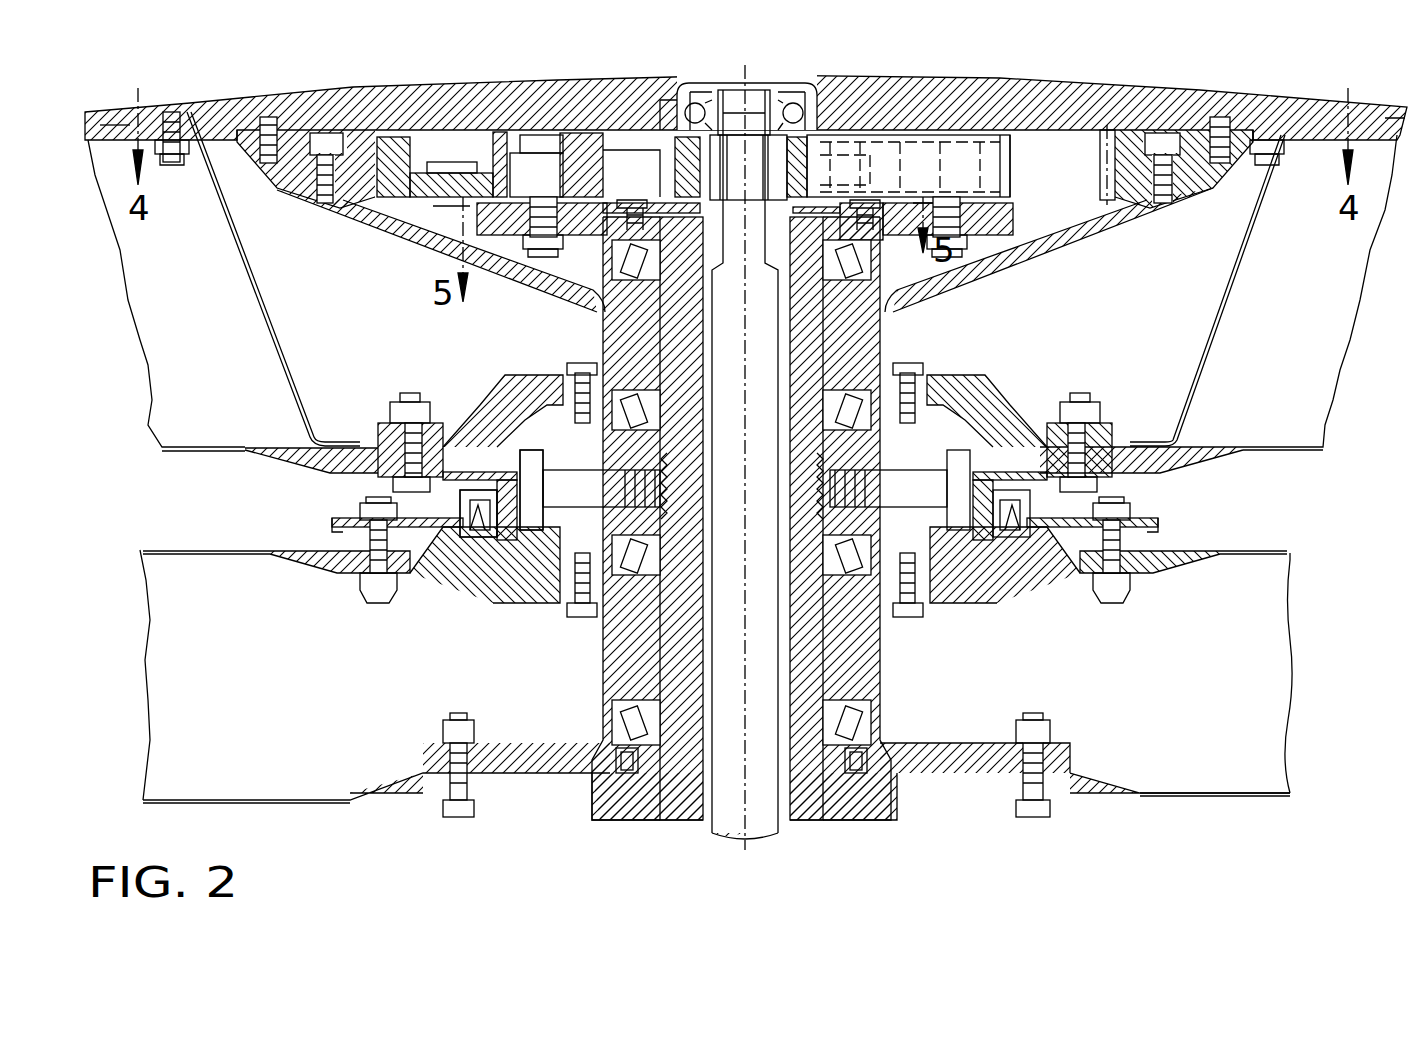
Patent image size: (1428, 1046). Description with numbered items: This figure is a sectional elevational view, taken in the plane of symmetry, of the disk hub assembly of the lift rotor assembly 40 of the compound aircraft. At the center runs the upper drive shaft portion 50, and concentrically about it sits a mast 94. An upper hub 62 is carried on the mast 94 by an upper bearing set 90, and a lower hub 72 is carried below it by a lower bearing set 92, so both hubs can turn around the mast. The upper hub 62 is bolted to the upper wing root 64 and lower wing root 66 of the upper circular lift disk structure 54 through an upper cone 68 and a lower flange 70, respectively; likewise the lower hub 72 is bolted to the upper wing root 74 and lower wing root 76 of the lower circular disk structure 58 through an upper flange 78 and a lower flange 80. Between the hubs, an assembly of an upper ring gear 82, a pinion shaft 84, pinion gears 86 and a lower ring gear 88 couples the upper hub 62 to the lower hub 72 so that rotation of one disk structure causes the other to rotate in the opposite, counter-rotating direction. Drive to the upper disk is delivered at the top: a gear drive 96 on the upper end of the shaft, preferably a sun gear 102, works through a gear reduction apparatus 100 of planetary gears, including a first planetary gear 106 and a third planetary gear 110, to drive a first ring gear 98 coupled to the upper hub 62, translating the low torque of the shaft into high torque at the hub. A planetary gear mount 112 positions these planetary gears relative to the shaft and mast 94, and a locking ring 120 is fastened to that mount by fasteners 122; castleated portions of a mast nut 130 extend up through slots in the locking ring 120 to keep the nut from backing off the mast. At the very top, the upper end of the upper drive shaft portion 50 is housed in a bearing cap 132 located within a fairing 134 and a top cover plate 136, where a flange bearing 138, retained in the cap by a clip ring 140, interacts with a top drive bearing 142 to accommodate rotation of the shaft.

The lift rotor assembly 40 is at (290, 80).
The upper drive shaft portion 50 is at (765, 838).
The upper circular lift disk structure 54 is at (1340, 385).
The lower circular disk structure 58 is at (1290, 665).
The upper hub 62 is at (882, 346).
The upper wing root 64 is at (1385, 110).
The lower wing root 66 is at (1185, 466).
The upper cone 68 is at (1100, 240).
The lower flange 70 is at (1010, 385).
The lower hub 72 is at (893, 662).
The upper wing root 74 is at (1170, 560).
The lower wing root 76 is at (1135, 790).
The upper flange 78 is at (1160, 535).
The lower flange 80 is at (1070, 750).
The upper ring gear 82 is at (950, 410).
The pinion shaft 84 is at (600, 502).
The pinion gears 86 is at (557, 548).
The lower ring gear 88 is at (935, 540).
The upper bearing set 90 is at (625, 335).
The lower bearing set 92 is at (640, 640).
The mast 94 is at (880, 822).
The gear drive 96 is at (598, 108).
The first ring gear 98 is at (1096, 172).
The gear reduction apparatus 100 is at (1020, 152).
The sun gear 102 is at (700, 172).
The first planetary gear 106 is at (420, 155).
The third planetary gear 110 is at (1003, 203).
The planetary gear mount 112 is at (905, 210).
The locking ring 120 is at (845, 195).
The fasteners 122 is at (872, 203).
The mast nut 130 is at (888, 312).
The bearing cap 132 is at (825, 92).
The fairing 134 is at (1110, 88).
The top cover plate 136 is at (1185, 110).
The flange bearing 138 is at (698, 102).
The clip ring 140 is at (770, 95).
The top drive bearing 142 is at (660, 110).